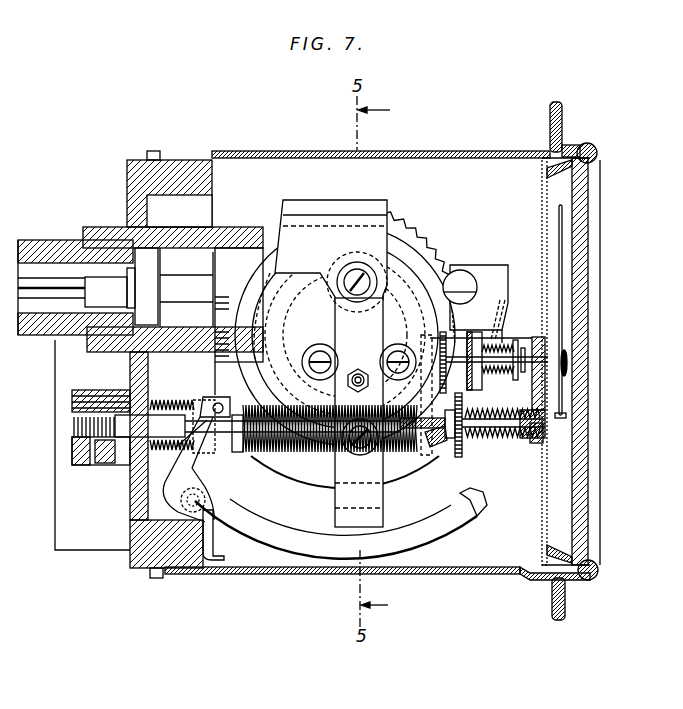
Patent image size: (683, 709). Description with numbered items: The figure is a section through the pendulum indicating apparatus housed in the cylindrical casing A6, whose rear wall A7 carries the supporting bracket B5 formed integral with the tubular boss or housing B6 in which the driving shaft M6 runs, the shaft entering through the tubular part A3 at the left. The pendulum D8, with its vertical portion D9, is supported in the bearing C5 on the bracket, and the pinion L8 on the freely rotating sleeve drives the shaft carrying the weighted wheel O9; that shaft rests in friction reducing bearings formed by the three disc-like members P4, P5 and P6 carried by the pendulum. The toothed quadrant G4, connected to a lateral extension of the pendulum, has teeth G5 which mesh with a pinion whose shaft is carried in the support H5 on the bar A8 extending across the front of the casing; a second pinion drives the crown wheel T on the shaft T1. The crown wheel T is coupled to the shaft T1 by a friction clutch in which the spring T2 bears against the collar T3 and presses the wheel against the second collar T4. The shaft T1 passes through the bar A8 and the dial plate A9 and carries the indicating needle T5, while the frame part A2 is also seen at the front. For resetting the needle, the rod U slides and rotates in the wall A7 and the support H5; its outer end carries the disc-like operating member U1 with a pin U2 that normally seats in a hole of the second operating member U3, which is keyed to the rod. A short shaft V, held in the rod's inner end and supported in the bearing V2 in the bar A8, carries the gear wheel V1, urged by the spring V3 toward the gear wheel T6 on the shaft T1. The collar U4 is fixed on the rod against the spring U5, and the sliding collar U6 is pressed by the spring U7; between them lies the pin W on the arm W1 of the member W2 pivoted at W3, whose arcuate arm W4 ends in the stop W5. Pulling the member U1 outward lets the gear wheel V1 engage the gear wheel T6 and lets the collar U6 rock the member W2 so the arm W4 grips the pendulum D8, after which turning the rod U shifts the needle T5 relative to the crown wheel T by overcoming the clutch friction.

The driving shaft M6 is at (180, 287).
The disc-like member P4 is at (320, 327).
The cylindrical casing A6 is at (262, 151).
The supporting bracket B5 is at (363, 202).
The bearing C5 is at (399, 151).
The pinion L8 is at (442, 150).
The vertical portion of pendulum D9 is at (428, 330).
The rear wall A7 is at (138, 210).
The shaft tube A3 is at (75, 262).
The tubular boss or housing B6 is at (55, 345).
The pin U2 is at (88, 398).
The disc-like operating member U1 is at (72, 442).
The second operating member U3 is at (97, 462).
The rod U is at (150, 423).
The spring U5 is at (193, 463).
The arm W1 is at (173, 477).
The pivot W3 is at (127, 538).
The pivoted member W2 is at (140, 558).
The collar U4 is at (200, 402).
The pin W is at (213, 403).
The second collar U6 is at (243, 452).
The spring U7 is at (305, 452).
The weighted wheel O9 is at (262, 538).
The pendulum D8 is at (350, 513).
The arcuate arm W4 is at (398, 542).
The disc-like member P6 is at (440, 530).
The indicating needle T5 is at (562, 228).
The casing wall A2 is at (575, 258).
The toothed quadrant G4 is at (502, 280).
The teeth G5 is at (495, 305).
The crown wheel T is at (495, 340).
The shaft T1 is at (548, 363).
The bar A8 is at (530, 395).
The short shaft V is at (542, 422).
The bearing V2 is at (545, 435).
The plate constituting a dial A9 is at (543, 465).
The disc-like member P5 is at (460, 270).
The gear wheel T6 is at (486, 328).
The spring T2 is at (480, 372).
The collar T3 is at (522, 374).
The second collar T4 is at (462, 437).
The spring V3 is at (503, 433).
The support H5 is at (432, 446).
The gear wheel V1 is at (465, 455).
The projection or stop W5 is at (470, 500).